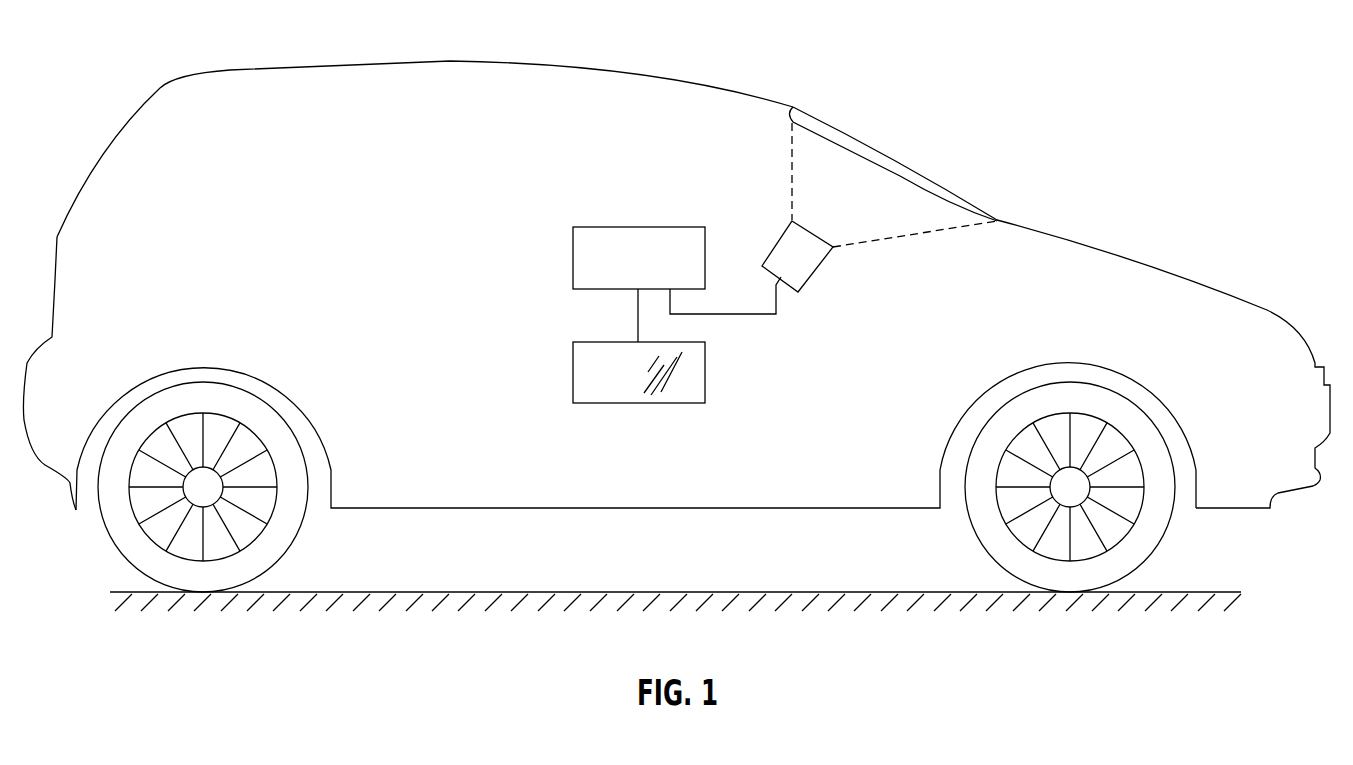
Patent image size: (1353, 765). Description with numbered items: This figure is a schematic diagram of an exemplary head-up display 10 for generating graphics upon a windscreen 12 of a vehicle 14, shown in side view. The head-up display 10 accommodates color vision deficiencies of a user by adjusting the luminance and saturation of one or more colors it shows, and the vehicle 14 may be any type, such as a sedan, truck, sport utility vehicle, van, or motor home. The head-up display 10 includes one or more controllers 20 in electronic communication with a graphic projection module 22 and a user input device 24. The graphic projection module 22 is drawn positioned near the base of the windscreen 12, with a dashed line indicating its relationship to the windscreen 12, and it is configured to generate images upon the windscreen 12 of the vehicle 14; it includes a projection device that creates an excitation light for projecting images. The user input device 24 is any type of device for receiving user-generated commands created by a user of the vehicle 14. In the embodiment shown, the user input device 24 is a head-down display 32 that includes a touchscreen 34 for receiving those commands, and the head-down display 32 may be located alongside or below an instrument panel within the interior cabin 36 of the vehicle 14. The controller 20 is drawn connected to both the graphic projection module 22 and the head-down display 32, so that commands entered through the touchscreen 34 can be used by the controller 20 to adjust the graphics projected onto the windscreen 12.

The head-up display 10 is at (676, 310).
The windscreen 12 is at (900, 162).
The vehicle 14 is at (103, 155).
The controller 20 is at (653, 272).
The graphic projection module 22 is at (809, 272).
The user input device 24 is at (680, 390).
The head-down display 32 is at (638, 405).
The touchscreen 34 is at (630, 389).
The interior cabin 36 is at (533, 135).